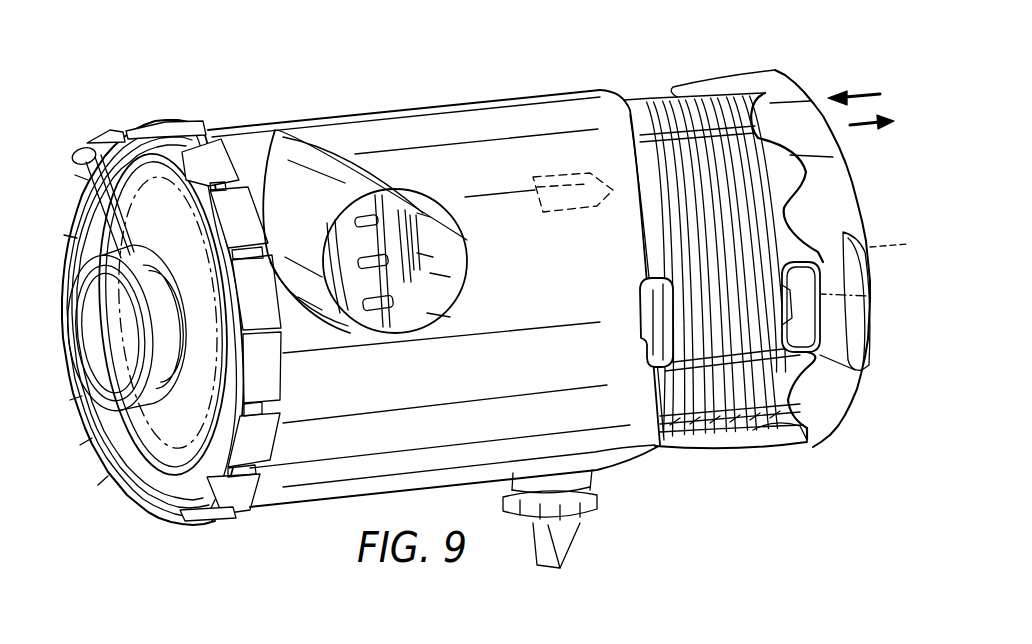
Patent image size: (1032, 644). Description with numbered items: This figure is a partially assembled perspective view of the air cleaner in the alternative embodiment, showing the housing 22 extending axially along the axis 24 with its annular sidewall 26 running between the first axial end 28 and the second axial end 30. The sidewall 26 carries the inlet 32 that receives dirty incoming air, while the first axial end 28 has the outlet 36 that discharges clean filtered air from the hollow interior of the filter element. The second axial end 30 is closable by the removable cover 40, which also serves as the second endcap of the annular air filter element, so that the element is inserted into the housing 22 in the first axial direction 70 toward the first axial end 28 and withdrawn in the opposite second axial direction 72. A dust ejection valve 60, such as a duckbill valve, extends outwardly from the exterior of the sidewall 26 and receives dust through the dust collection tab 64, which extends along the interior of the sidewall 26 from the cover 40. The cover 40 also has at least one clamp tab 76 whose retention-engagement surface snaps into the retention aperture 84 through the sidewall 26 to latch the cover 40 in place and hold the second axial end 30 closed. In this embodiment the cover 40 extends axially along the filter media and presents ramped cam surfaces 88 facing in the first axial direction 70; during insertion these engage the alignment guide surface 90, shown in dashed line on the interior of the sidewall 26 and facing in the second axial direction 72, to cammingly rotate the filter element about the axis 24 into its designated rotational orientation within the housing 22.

The housing 22 is at (363, 113).
The axis 24 is at (885, 253).
The annular sidewall 26 is at (457, 125).
The first axial end 28 is at (186, 130).
The second axial end 30 is at (624, 107).
The inlet 32 is at (345, 282).
The outlet 36 is at (133, 353).
The removable cover 40 is at (787, 90).
The dust ejection valve 60 is at (568, 543).
The dust collection tab 64 is at (655, 458).
The first axial direction 70 is at (862, 92).
The second axial direction 72 is at (868, 128).
The clamp tab 76 is at (783, 283).
The retention aperture 84 is at (640, 296).
The cam surface 88 is at (668, 103).
The alignment guide surface 90 is at (573, 213).